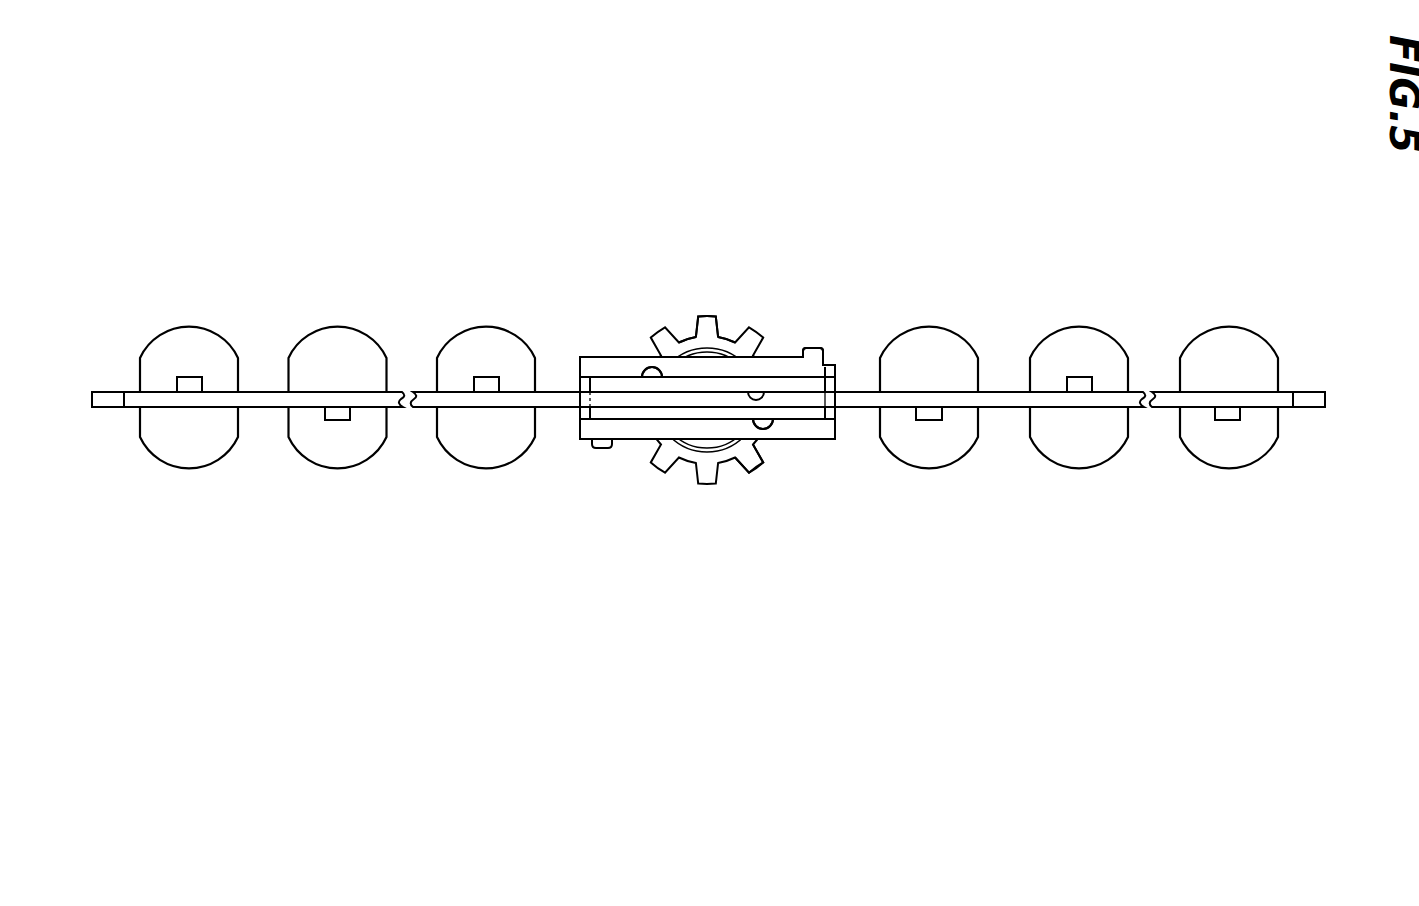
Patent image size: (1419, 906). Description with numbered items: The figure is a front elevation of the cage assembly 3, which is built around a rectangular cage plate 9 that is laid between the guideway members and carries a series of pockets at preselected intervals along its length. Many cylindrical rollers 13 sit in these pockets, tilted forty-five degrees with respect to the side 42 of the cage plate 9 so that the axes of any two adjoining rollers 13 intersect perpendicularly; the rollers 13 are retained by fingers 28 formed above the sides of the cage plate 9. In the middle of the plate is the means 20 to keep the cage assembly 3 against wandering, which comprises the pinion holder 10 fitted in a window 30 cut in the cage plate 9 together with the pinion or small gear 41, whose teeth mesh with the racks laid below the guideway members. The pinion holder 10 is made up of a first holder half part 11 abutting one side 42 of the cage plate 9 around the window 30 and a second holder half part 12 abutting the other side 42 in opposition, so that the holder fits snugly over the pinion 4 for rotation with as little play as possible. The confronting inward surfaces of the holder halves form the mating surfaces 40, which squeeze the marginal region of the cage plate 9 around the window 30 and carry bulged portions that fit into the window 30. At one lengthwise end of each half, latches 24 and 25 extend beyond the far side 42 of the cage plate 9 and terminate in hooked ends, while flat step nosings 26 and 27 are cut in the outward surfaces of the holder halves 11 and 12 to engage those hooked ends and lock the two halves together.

The cage assembly 3 is at (258, 397).
The cage plate 9 is at (1002, 397).
The pinion 4 is at (715, 332).
The pinion holder 10 is at (789, 352).
The first holder half part 11 is at (618, 362).
The second holder half part 12 is at (641, 434).
The cylindrical rollers 13 is at (307, 440).
The means to keep the cage assembly against wandering 20 is at (650, 318).
The latch 24 is at (600, 448).
The latch 25 is at (815, 348).
The flat step nosing 26 is at (829, 370).
The flat step nosing 27 is at (588, 428).
The fingers 28 is at (190, 377).
The window 30 is at (824, 400).
The mating surfaces 40 is at (758, 397).
The pinion or small gear 41 is at (667, 335).
The side of the cage plate 42 is at (596, 378).